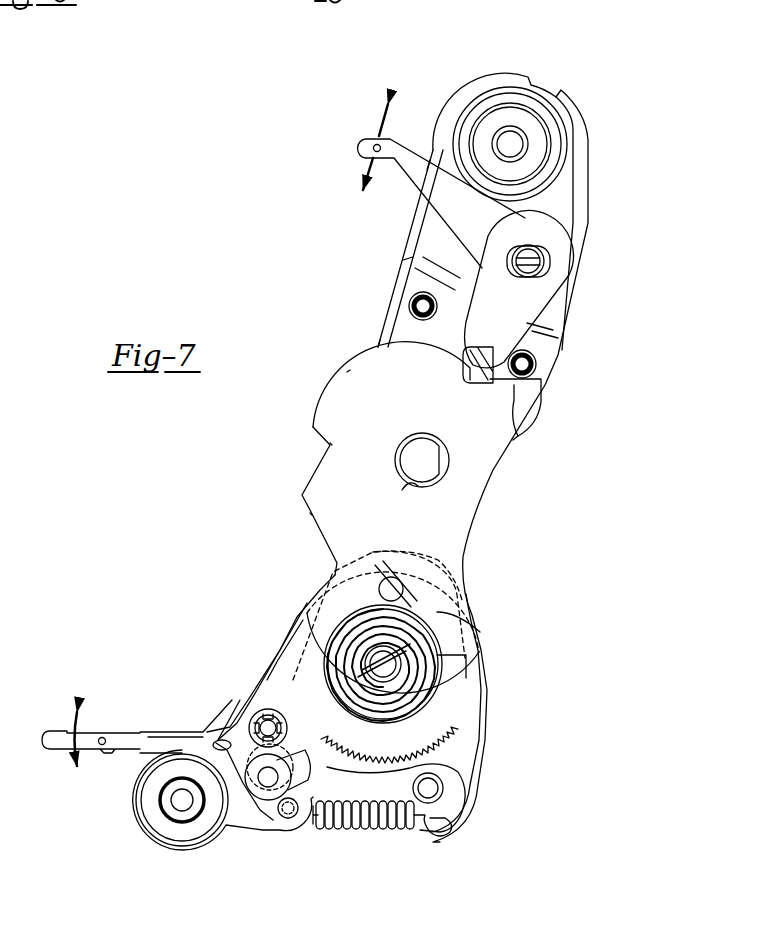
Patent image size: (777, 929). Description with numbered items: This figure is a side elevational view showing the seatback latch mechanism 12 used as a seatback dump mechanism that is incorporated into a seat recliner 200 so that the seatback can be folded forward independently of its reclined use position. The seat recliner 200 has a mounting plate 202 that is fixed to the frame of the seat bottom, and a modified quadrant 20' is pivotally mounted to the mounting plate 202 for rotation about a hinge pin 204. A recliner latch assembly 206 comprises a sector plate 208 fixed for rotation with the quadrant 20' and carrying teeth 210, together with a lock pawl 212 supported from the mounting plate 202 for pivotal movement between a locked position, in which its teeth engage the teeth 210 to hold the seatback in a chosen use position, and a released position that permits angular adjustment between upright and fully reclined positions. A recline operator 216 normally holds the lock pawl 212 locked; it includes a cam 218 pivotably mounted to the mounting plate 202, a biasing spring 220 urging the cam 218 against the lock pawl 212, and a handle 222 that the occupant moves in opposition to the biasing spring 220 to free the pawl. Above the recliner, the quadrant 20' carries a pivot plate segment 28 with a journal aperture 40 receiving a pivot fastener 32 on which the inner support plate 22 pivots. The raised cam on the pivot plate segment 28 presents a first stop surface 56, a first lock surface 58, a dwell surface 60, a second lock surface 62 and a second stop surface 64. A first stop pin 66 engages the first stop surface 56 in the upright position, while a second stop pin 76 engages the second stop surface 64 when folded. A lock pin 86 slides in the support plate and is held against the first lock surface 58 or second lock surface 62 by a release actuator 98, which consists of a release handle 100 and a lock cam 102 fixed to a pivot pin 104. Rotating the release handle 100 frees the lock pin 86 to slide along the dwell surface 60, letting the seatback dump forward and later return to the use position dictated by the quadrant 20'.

The seatback latch mechanism 12 is at (366, 284).
The modified quadrant 20' is at (483, 457).
The inner support plate 22 is at (502, 78).
The pivot plate segment 28 is at (389, 420).
The pivot fastener 32 is at (422, 458).
The journal aperture 40 is at (408, 487).
The first stop surface 56 is at (518, 433).
The first lock surface 58 is at (470, 370).
The dwell surface 60 is at (347, 372).
The second lock surface 62 is at (330, 443).
The second stop surface 64 is at (310, 513).
The first stop pin 66 is at (537, 364).
The second stop pin 76 is at (408, 307).
The lock pin 86 is at (485, 380).
The release actuator 98 is at (436, 222).
The release handle 100 is at (484, 232).
The lock cam 102 is at (514, 322).
The pivot pin 104 is at (529, 246).
The seat recliner 200 is at (273, 628).
The mounting plate 202 is at (227, 826).
The hinge pin 204 is at (390, 672).
The recliner latch assembly 206 is at (462, 764).
The sector plate 208 is at (432, 621).
The teeth 210 is at (460, 740).
The lock pawl 212 is at (386, 804).
The recline operator 216 is at (190, 727).
The cam 218 is at (277, 833).
The biasing spring 220 is at (345, 833).
The handle 222 is at (124, 737).